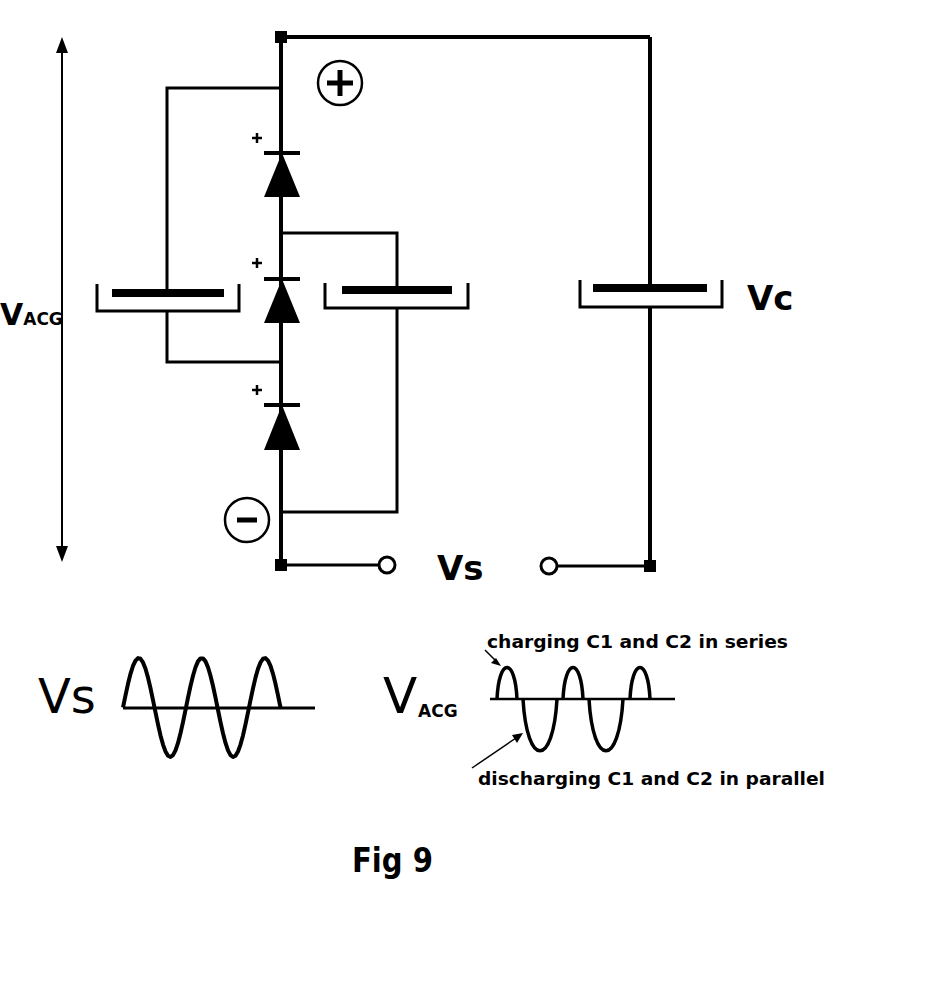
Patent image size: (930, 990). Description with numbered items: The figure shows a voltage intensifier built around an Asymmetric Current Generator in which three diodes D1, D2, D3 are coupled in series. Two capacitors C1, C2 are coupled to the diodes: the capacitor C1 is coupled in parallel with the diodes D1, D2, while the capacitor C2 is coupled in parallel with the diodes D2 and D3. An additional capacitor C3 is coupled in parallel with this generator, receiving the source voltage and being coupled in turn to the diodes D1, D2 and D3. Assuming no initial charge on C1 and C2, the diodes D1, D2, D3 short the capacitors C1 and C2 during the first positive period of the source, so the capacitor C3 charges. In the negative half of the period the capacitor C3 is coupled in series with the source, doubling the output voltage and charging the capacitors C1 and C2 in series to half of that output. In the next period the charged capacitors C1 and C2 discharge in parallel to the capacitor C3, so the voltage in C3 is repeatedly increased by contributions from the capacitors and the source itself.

The diode D1 is at (289, 154).
The diode D2 is at (269, 274).
The diode D3 is at (289, 410).
The capacitor C1 is at (189, 225).
The capacitor C2 is at (374, 372).
The capacitor C3 is at (631, 305).